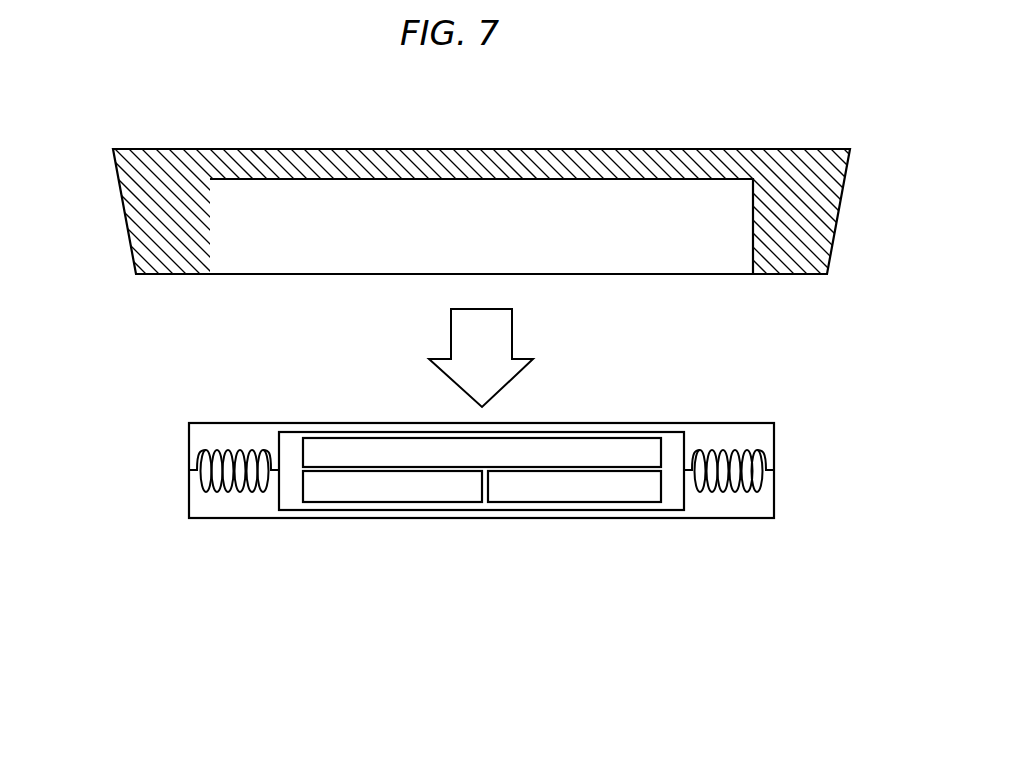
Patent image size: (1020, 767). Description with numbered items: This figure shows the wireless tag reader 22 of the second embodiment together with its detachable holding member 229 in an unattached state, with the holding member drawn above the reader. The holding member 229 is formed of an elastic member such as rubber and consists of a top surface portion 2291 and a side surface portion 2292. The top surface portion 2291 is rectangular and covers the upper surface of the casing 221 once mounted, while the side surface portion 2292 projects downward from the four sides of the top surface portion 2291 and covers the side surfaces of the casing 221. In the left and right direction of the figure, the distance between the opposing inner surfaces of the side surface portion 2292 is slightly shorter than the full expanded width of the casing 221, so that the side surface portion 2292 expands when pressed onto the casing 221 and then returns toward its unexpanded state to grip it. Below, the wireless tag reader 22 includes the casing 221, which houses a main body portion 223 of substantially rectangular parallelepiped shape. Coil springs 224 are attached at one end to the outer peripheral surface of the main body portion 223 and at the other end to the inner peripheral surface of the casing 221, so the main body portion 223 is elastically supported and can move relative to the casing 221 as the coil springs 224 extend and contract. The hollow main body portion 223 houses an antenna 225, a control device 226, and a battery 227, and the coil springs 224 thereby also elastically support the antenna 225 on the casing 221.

The holding member 229 is at (810, 138).
The top surface portion 2291 is at (416, 158).
The side surface portion 2292 is at (128, 243).
The wireless tag reader 22 is at (755, 381).
The casing 221 is at (189, 433).
The main body portion 223 is at (481, 511).
The coil springs 224 is at (757, 490).
The antenna 225 is at (603, 434).
The control device 226 is at (378, 503).
The battery 227 is at (577, 503).